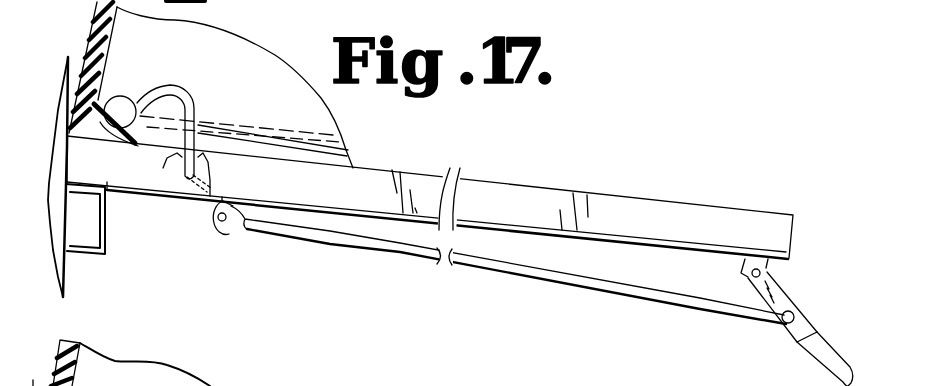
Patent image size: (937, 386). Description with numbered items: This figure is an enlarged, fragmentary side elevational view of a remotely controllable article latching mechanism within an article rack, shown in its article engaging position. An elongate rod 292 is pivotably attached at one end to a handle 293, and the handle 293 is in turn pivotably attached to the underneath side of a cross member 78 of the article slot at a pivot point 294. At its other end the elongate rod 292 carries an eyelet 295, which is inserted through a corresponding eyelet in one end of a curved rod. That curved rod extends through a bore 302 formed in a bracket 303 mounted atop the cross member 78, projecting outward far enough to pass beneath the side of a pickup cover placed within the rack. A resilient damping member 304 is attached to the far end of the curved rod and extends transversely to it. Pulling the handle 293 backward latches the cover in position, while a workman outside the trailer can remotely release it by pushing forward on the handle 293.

The cross member 78 is at (547, 188).
The elongate rod 292 is at (537, 281).
The handle 293 is at (799, 341).
The pivot point 294 is at (768, 269).
The eyelet 295 is at (220, 226).
The bore 302 is at (163, 168).
The bracket 303 is at (182, 193).
The resilient damping member 304 is at (133, 95).